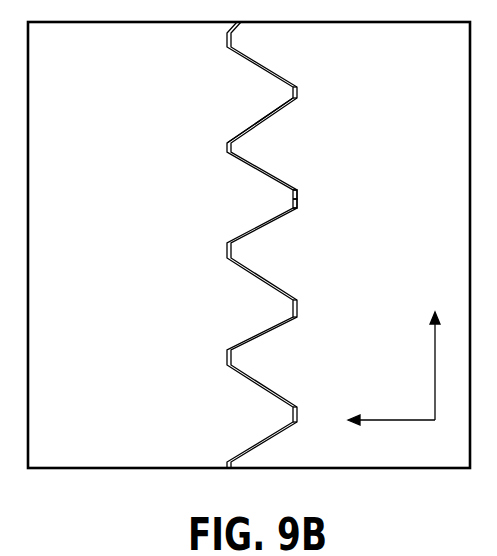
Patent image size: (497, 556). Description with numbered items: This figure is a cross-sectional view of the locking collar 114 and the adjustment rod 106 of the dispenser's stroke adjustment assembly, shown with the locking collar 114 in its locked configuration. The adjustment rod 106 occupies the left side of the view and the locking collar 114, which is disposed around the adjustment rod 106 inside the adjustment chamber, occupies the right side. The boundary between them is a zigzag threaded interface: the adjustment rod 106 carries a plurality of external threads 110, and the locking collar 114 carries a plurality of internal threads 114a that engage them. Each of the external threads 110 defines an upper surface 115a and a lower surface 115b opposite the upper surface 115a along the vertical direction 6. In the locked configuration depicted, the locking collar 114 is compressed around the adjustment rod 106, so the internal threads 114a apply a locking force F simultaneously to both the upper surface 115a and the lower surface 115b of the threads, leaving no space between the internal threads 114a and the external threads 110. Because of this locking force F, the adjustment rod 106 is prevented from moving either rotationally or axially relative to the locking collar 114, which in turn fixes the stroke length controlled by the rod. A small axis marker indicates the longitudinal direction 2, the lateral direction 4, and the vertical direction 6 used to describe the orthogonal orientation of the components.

The external threads 110 is at (243, 406).
The internal threads 114a is at (250, 130).
The locking collar 114 is at (390, 104).
The adjustment rod 106 is at (147, 393).
The upper surface 115a is at (297, 188).
The lower surface 115b is at (297, 210).
The locking force F is at (276, 168).
The longitudinal direction 2 is at (450, 441).
The lateral direction 4 is at (391, 434).
The vertical direction 6 is at (443, 366).